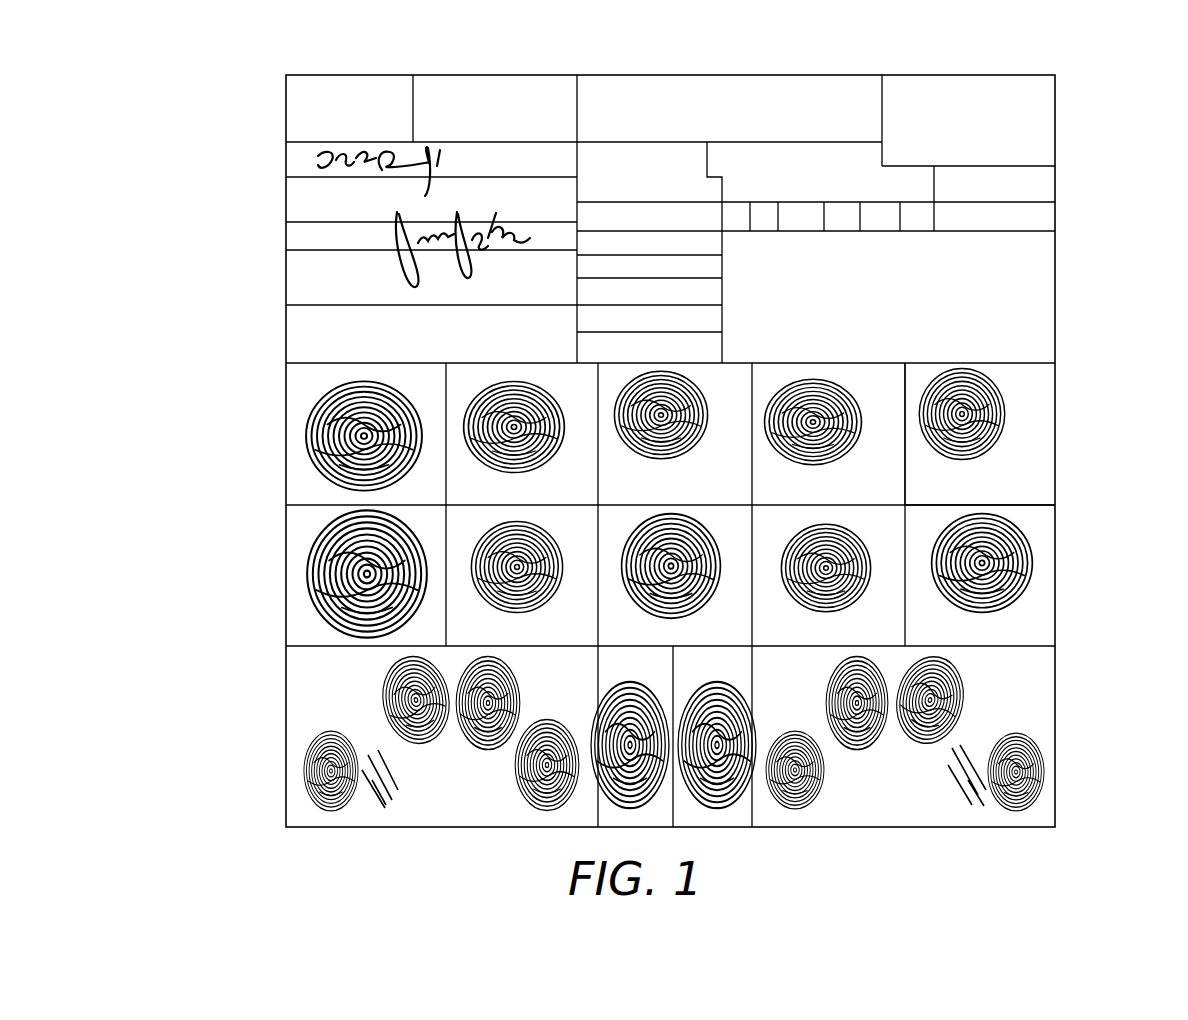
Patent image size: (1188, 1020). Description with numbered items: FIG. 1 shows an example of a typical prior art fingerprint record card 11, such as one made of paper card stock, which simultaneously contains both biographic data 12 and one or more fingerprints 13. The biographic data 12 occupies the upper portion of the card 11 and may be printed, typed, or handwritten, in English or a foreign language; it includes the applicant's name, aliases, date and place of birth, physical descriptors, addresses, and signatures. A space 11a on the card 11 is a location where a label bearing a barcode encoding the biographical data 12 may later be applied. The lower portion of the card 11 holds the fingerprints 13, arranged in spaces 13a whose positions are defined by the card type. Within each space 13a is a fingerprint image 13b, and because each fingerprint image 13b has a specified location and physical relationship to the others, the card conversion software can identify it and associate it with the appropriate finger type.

The fingerprint record card 11 is at (244, 78).
The space 11a is at (1045, 312).
The biographic data 12 is at (260, 200).
The fingerprints 13 is at (222, 592).
The spaces 13a is at (1057, 482).
The fingerprint image 13b is at (1030, 400).